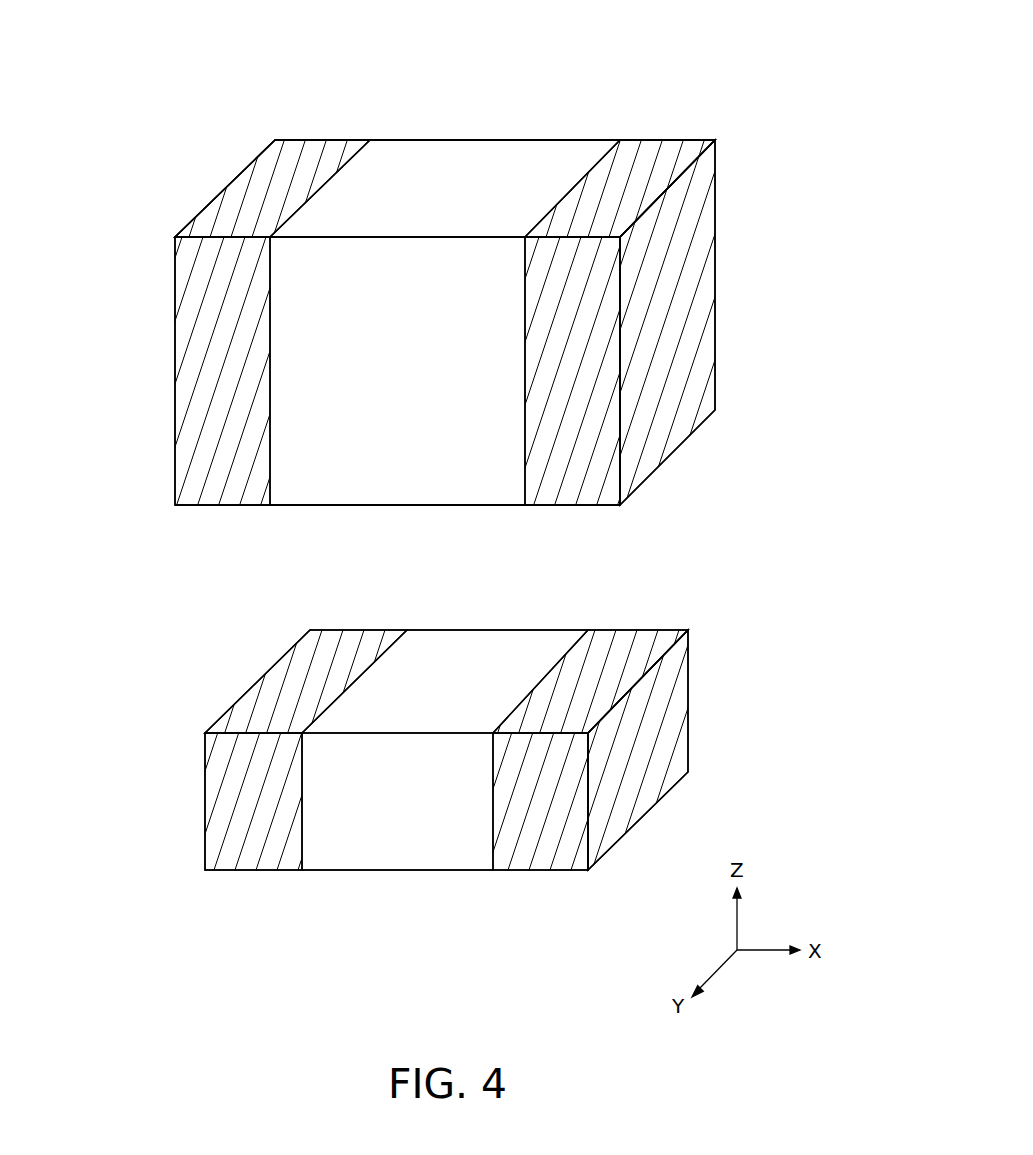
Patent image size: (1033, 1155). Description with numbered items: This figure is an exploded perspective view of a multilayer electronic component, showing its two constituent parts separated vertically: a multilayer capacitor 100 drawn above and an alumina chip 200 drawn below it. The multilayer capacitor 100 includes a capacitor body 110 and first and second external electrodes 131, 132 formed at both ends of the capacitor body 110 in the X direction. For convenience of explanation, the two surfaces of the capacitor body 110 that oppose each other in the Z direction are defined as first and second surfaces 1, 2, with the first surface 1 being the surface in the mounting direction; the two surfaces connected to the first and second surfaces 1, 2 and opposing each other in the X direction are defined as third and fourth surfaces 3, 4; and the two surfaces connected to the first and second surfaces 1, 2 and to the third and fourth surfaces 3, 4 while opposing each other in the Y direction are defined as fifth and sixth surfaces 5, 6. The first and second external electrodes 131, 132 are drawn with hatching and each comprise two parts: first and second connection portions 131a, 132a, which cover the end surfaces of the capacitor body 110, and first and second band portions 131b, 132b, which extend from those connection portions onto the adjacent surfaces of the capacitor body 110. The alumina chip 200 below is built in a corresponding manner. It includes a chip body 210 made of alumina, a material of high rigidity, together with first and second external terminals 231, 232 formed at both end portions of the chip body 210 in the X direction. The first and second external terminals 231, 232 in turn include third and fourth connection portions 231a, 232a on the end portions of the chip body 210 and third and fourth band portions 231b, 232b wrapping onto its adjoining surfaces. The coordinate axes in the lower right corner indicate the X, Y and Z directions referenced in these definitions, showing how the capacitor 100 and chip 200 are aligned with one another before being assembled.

The multilayer capacitor 100 is at (342, 105).
The capacitor body 110 is at (415, 153).
The first surface 1 is at (430, 476).
The second surface 2 is at (459, 162).
The third surface 3 is at (190, 331).
The fourth surface 4 is at (691, 322).
The fifth surface 5 is at (359, 473).
The sixth surface 6 is at (550, 158).
The first external electrode 131 is at (190, 331).
The first connection portion 131a is at (185, 342).
The first band portion 131b is at (203, 502).
The second external electrode 132 is at (691, 322).
The second connection portion 132a is at (696, 315).
The second band portion 132b is at (643, 480).
The alumina chip 200 is at (265, 632).
The chip body 210 is at (360, 855).
The first external terminal 231 is at (233, 750).
The third connection portion 231a is at (207, 742).
The third band portion 231b is at (273, 677).
The second external terminal 232 is at (671, 726).
The fourth connection portion 232a is at (677, 675).
The fourth band portion 232b is at (643, 637).